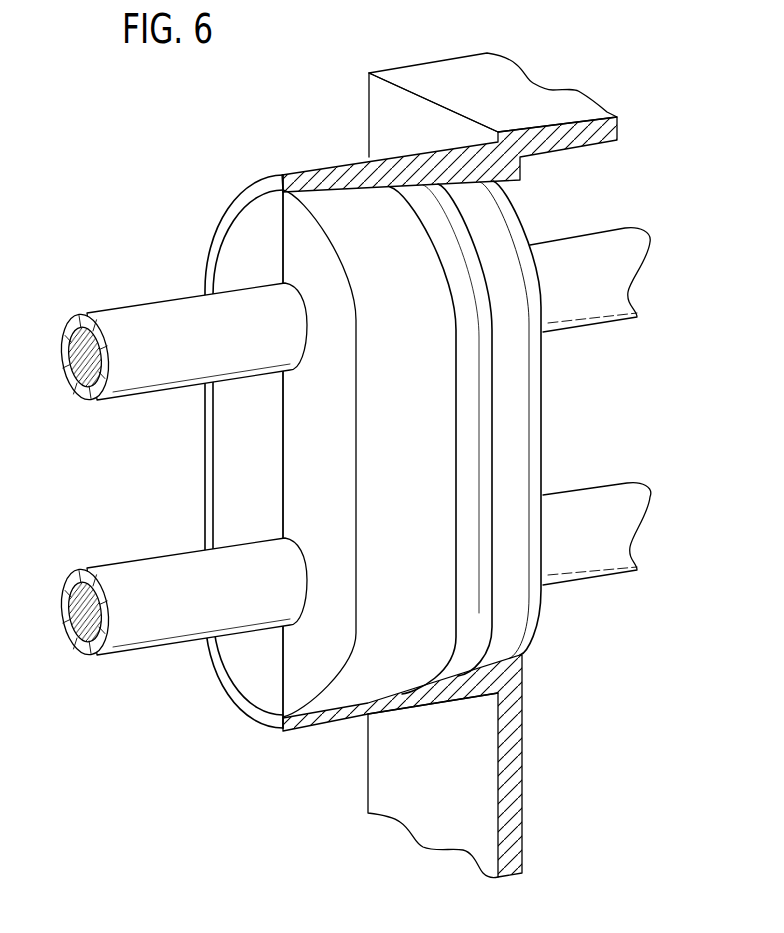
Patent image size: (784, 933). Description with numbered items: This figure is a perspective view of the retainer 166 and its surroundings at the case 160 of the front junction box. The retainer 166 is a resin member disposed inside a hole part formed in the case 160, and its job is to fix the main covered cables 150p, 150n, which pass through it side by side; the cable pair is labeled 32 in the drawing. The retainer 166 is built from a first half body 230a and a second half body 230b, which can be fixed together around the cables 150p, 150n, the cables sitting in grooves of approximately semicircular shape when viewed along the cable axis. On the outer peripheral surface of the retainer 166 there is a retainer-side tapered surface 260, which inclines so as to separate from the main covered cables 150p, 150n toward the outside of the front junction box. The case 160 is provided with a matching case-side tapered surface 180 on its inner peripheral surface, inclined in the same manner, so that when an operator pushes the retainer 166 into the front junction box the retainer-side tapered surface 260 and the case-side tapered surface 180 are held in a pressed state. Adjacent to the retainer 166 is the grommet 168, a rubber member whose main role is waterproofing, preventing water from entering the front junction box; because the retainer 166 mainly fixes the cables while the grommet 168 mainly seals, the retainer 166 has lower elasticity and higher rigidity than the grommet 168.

The case 160 is at (338, 176).
The retainer-side tapered surface 260 is at (234, 473).
The case-side tapered surface 180 is at (375, 188).
The grommet 168 is at (513, 432).
The bus bar pair 32 is at (181, 470).
The main covered cable 150p is at (133, 378).
The main covered cable 150n is at (132, 568).
The retainer 166 is at (213, 473).
The first half body 230a is at (253, 663).
The second half body 230b is at (313, 695).